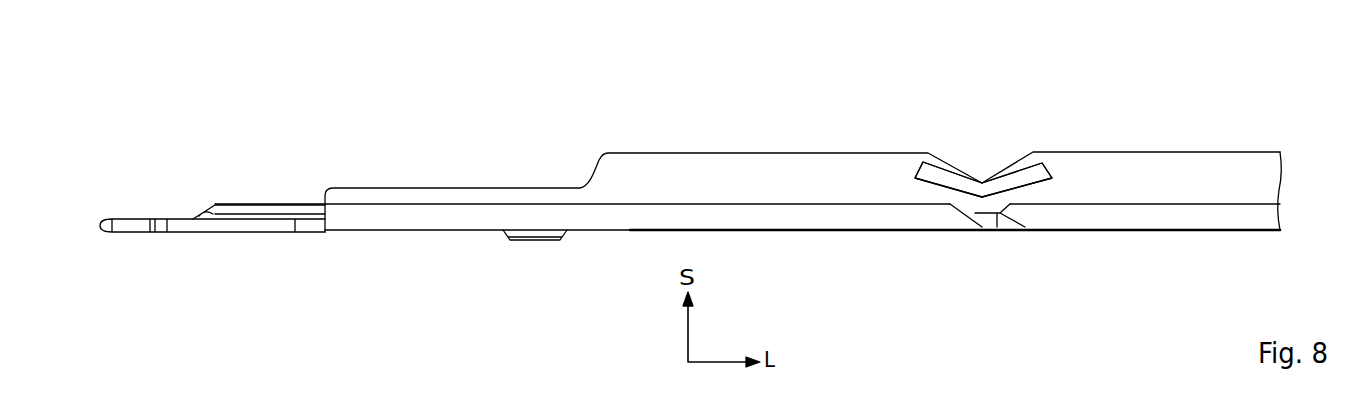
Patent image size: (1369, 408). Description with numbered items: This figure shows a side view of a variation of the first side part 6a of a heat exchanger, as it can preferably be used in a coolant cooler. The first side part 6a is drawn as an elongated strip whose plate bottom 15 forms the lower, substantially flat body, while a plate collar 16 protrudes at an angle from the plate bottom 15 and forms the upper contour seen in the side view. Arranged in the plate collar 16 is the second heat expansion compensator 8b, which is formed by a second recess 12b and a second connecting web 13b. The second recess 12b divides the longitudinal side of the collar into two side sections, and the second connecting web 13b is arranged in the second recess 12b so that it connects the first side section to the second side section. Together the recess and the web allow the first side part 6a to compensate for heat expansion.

The first side part 6a is at (1297, 149).
The plate collar 16 is at (792, 165).
The plate bottom 15 is at (890, 217).
The second heat expansion compensator 8b is at (980, 152).
The second recess 12b is at (963, 157).
The second connecting web 13b is at (1007, 163).